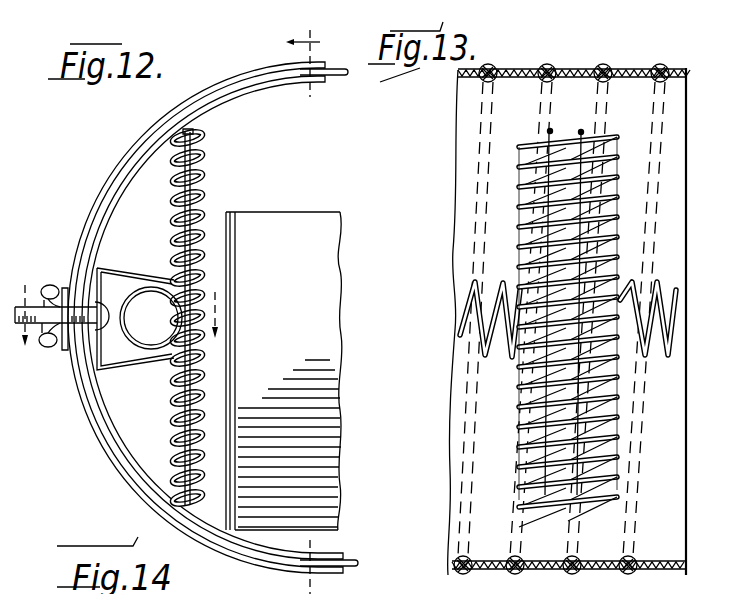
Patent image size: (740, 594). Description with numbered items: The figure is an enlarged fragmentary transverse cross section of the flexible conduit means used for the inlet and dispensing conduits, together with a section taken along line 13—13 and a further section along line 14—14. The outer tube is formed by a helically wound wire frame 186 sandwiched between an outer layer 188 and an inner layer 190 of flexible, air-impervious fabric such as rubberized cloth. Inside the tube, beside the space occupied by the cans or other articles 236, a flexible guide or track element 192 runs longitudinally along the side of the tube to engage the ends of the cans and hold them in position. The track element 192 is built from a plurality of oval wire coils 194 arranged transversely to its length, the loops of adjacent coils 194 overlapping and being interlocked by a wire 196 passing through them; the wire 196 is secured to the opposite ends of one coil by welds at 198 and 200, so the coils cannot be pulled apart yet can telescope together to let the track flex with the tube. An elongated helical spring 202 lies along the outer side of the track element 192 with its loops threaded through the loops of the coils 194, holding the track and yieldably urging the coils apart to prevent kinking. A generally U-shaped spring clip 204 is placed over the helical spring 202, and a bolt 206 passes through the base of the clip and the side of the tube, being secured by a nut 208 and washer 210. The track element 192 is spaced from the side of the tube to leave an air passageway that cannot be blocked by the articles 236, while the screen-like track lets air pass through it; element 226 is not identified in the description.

In FIG. 12, the section line 13— 13 is at (319, 62).
In FIG. 12, the section line 14— 14 is at (193, 427).
In FIG. 12, the helically wound wire frame 186 is at (330, 78).
In FIG. 13, the helically wound wire frame 186 is at (497, 64).
In FIG. 12, the outer layer of flexible fabric 188 is at (125, 486).
In FIG. 13, the outer layer of flexible fabric 188 is at (633, 67).
In FIG. 12, the inner layer of flexible fabric 190 is at (122, 455).
In FIG. 13, the inner layer of flexible fabric 190 is at (630, 80).
In FIG. 12, the flexible guide or track element 192 is at (208, 165).
In FIG. 12, the oval wire coils 194 is at (200, 198).
In FIG. 13, the oval wire coils 194 is at (520, 135).
In FIG. 12, the wire 196 is at (195, 200).
In FIG. 13, the wire 196 is at (522, 170).
In FIG. 13, the weld 198 is at (551, 129).
In FIG. 13, the weld 200 is at (547, 500).
In FIG. 12, the elongated helical spring 202 is at (139, 358).
In FIG. 13, the elongated helical spring 202 is at (667, 323).
In FIG. 12, the U-shaped spring clip 204 is at (125, 268).
In FIG. 12, the bolt 206 is at (65, 343).
In FIG. 12, the nut 208 is at (62, 288).
In FIG. 12, the washer 210 is at (36, 326).
In FIG. 13, the suspension strand 226 is at (583, 338).
In FIG. 12, the cans or other articles 236 is at (315, 248).